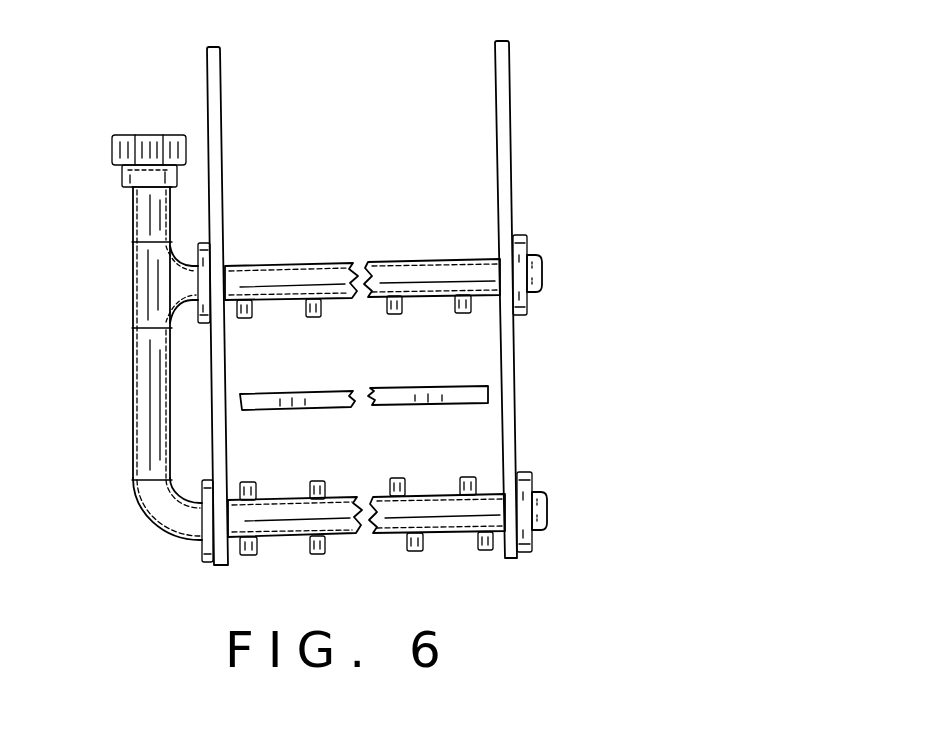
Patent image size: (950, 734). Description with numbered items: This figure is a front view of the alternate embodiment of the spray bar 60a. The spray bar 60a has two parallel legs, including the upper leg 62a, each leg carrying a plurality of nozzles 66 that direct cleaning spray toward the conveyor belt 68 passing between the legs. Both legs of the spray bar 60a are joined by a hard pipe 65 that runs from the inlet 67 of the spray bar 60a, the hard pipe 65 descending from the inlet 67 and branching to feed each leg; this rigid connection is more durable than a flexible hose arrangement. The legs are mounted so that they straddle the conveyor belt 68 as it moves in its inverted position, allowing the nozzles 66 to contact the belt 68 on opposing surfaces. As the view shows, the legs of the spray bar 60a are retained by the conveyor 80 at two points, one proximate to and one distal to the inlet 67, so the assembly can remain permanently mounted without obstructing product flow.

The spray bar 60a is at (116, 263).
The upper leg 62a is at (545, 274).
The hard pipe 65 is at (133, 343).
The nozzles 66 is at (243, 318).
The inlet 67 is at (145, 135).
The conveyor belt 68 is at (432, 390).
The conveyor 80 is at (220, 135).